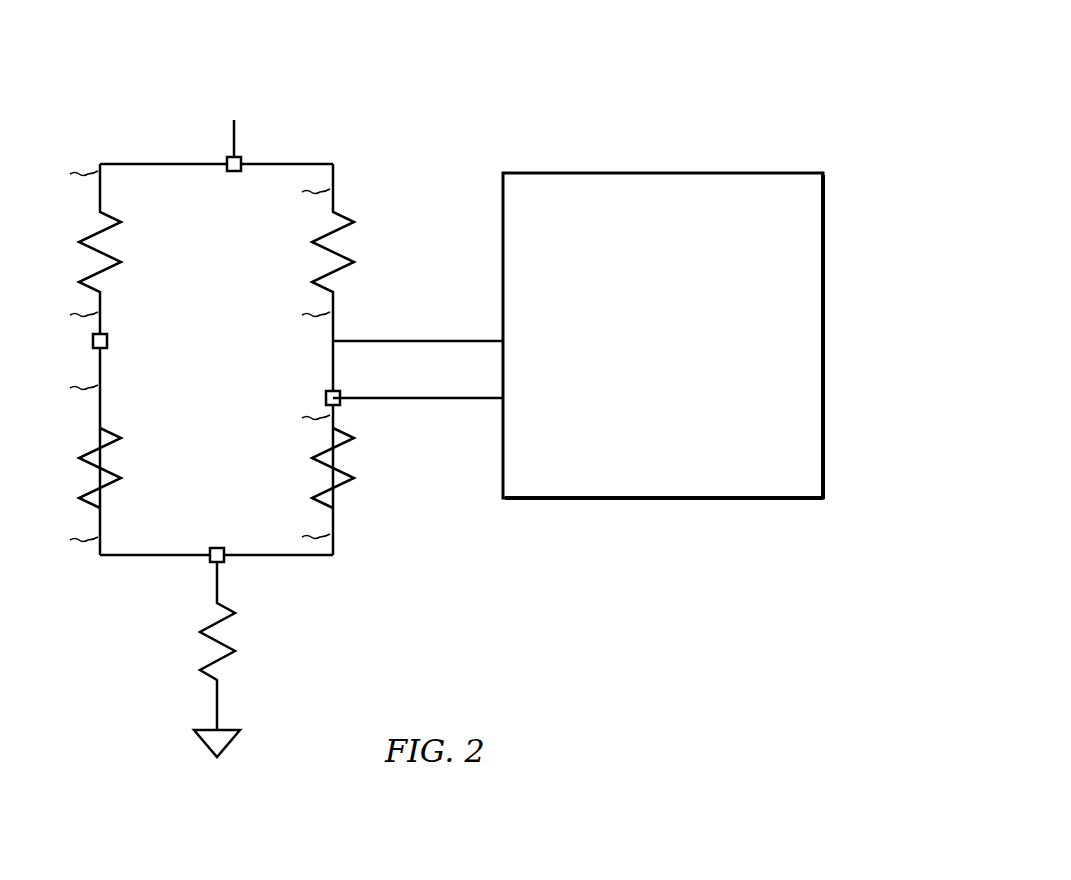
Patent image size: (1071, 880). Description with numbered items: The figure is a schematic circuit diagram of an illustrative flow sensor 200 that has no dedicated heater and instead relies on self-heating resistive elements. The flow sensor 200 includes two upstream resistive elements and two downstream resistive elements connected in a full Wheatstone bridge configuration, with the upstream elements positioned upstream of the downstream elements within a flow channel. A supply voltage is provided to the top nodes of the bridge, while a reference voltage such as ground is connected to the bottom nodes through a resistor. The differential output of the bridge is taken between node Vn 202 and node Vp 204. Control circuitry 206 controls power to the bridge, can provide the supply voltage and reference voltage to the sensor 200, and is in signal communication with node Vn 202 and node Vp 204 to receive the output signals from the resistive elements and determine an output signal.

The flow sensor 200 is at (697, 21).
The node Vn 202 is at (410, 341).
The node Vp 204 is at (418, 398).
The control circuitry 206 is at (663, 336).